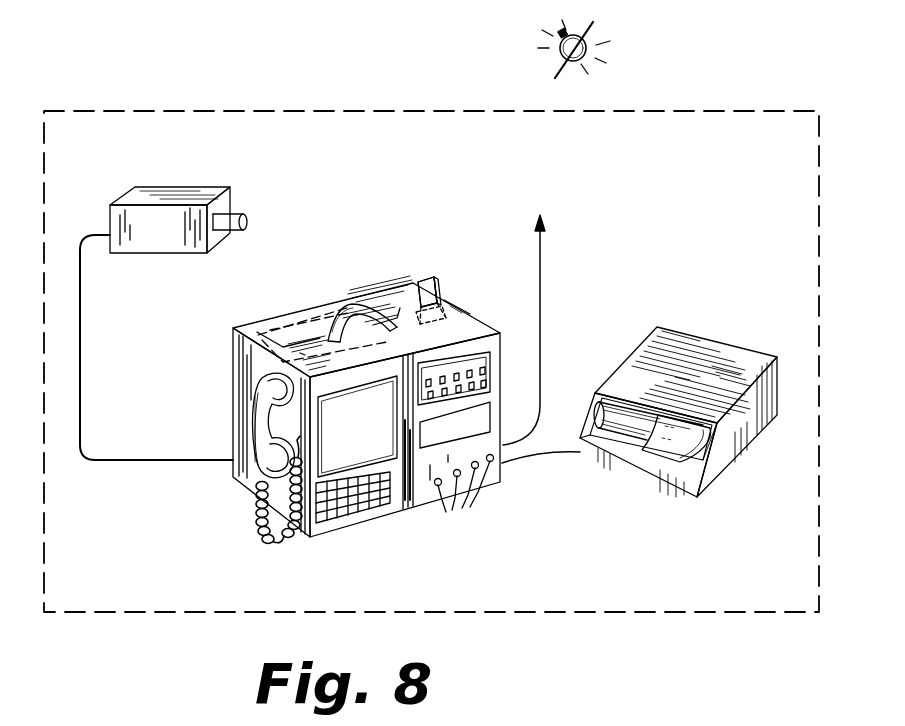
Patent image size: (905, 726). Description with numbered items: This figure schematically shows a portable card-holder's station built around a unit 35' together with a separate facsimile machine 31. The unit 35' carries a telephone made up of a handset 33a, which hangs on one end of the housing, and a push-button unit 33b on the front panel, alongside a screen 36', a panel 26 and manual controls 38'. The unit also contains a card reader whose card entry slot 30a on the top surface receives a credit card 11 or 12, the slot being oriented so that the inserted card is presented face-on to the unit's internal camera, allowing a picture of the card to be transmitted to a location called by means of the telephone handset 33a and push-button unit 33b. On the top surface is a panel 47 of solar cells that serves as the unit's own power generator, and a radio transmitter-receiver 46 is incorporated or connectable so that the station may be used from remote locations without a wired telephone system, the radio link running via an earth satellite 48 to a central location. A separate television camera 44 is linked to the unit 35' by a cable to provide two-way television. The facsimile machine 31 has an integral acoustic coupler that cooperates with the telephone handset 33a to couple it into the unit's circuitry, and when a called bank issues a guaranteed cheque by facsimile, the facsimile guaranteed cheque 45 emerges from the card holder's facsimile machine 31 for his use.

The earth satellite 48 is at (581, 56).
The television camera 44 is at (207, 183).
The radio transmitter-receiver 46 is at (305, 315).
The unit 35' is at (362, 295).
The credit card 11 is at (436, 268).
The credit card 12 is at (436, 268).
The card entry slot 30a is at (440, 312).
The panel of solar cells 47 is at (463, 325).
The display screen 36' is at (357, 426).
The push-button unit 33b is at (497, 362).
The display panel 26 is at (512, 400).
The control knobs 38' is at (462, 494).
The telephone handset 33a is at (266, 455).
The facsimile machine 31 is at (678, 427).
The facsimile guaranteed cheque 45 is at (660, 462).